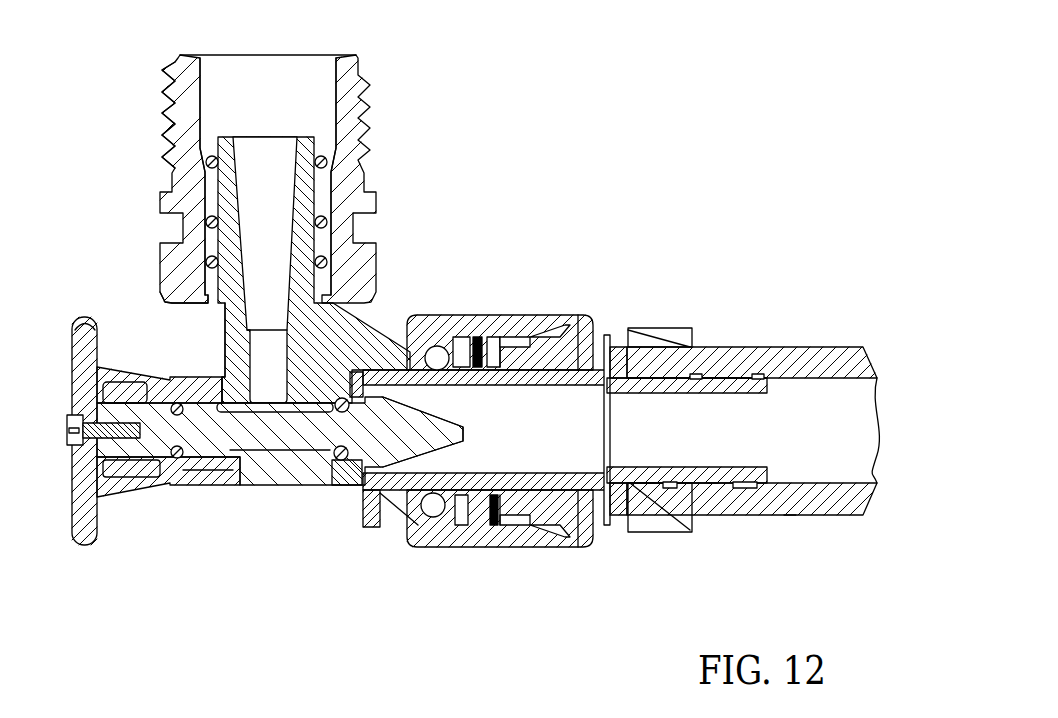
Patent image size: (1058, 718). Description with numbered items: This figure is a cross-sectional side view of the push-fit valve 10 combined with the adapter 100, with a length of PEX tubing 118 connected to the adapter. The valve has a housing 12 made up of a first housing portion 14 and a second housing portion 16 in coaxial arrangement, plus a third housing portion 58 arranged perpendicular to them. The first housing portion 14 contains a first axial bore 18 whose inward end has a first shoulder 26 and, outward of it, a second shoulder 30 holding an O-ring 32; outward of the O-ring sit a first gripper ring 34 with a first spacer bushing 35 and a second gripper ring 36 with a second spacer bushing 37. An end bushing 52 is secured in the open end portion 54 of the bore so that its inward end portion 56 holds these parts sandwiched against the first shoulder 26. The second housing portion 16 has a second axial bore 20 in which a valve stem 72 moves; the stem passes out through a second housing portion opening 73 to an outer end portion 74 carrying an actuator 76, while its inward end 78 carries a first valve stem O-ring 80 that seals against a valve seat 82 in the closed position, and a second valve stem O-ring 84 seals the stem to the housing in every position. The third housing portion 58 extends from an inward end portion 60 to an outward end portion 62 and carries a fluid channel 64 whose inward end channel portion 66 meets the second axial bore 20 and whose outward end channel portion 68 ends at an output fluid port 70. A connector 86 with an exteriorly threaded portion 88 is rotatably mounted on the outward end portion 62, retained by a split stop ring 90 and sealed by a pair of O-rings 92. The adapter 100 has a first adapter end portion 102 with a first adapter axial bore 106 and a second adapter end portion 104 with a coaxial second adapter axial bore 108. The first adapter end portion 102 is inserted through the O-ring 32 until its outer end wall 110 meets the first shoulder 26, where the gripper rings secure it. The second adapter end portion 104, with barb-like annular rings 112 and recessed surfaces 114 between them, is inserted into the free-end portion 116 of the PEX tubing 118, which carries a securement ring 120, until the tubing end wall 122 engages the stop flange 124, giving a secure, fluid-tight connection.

The push-fit valve 10 is at (86, 325).
The housing 12 is at (385, 495).
The first housing portion 14 is at (530, 548).
The second housing portion 16 is at (227, 485).
The first axial bore 18 is at (527, 354).
The second axial bore 20 is at (275, 470).
The first shoulder 26 is at (350, 487).
The second shoulder 30 is at (404, 522).
The O-ring 32 is at (465, 518).
The first gripper ring 34 is at (470, 344).
The first spacer bushing 35 is at (460, 330).
The second gripper ring 36 is at (496, 348).
The second spacer bushing 37 is at (481, 344).
The end bushing 52 is at (598, 498).
The open end portion 54 is at (568, 528).
The inward end portion 56 is at (507, 512).
The third housing portion 58 is at (212, 303).
The inward end portion 60 is at (262, 350).
The outward end portion 62 is at (316, 147).
The fluid channel 64 is at (302, 186).
The inward end channel portion 66 is at (240, 368).
The outward end channel portion 68 is at (270, 157).
The output fluid port 70 is at (250, 133).
The valve stem 72 is at (200, 473).
The second housing portion opening 73 is at (110, 458).
The outer end portion 74 is at (70, 447).
The actuator 76 is at (80, 370).
The inward end 78 is at (302, 458).
The first valve stem O-ring 80 is at (338, 462).
The valve seat 82 is at (346, 395).
The second valve stem O-ring 84 is at (167, 450).
The connector 86 is at (197, 172).
The exteriorly threaded portion 88 is at (166, 97).
The split stop ring 90 is at (206, 160).
The pair of O-rings 92 is at (206, 222).
The adapter 100 is at (551, 340).
The first adapter end portion 102 is at (607, 437).
The second adapter end portion 104 is at (713, 378).
The first adapter axial bore 106 is at (434, 512).
The second adapter axial bore 108 is at (740, 378).
The outer end wall 110 is at (404, 357).
The annular rings 112 is at (650, 485).
The recessed surfaces 114 is at (678, 497).
The free-end portion 116 is at (703, 352).
The PEX tubing 118 is at (843, 347).
The securement ring 120 is at (657, 330).
The end wall 122 is at (617, 347).
The stop flange 124 is at (590, 320).